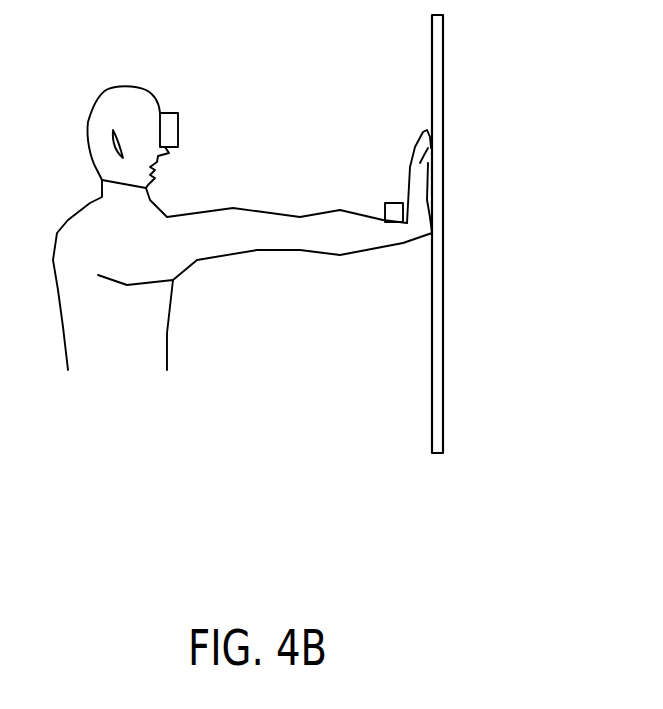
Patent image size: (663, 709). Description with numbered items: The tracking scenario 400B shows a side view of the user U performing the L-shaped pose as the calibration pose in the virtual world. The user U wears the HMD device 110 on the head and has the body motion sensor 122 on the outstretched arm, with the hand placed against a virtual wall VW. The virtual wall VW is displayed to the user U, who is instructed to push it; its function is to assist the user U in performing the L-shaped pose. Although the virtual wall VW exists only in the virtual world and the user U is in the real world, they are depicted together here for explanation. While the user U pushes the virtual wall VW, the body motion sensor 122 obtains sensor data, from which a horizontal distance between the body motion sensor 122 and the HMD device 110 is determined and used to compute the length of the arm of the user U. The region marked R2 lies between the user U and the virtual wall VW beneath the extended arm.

The user U is at (100, 93).
The HMD device 110 is at (162, 113).
The body motion sensor 122 is at (395, 203).
The virtual wall VW is at (438, 430).
The region R2 is at (350, 306).
The tracking scenario 400B is at (539, 554).